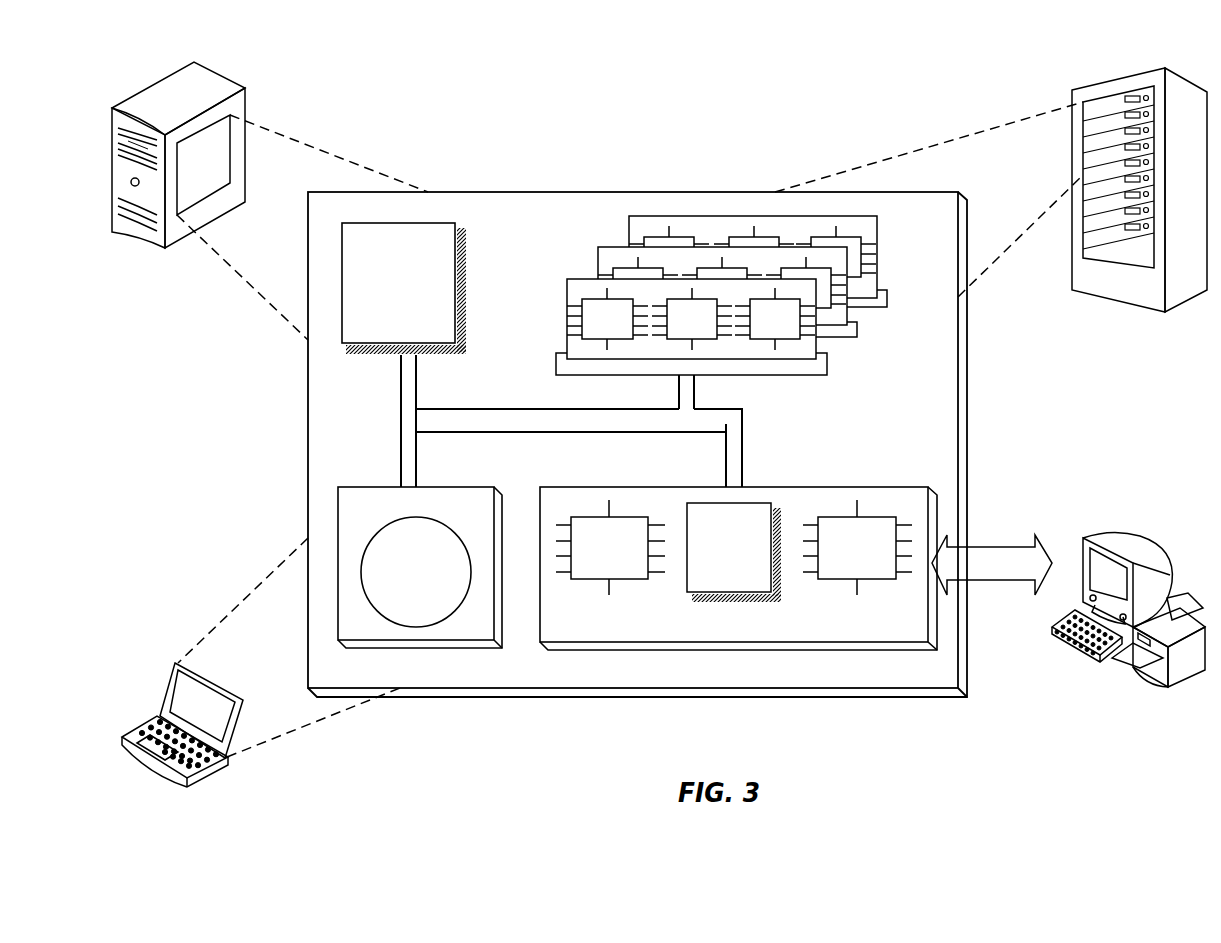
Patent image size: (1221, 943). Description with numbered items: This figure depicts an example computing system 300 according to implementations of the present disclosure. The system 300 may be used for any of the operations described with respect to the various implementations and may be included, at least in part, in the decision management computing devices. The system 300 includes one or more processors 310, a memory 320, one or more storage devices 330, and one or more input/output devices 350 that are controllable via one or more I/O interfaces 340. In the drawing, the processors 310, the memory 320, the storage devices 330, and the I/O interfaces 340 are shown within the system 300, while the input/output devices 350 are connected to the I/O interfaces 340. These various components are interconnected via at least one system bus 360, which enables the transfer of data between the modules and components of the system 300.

The computing system 300 is at (480, 121).
The processor 310 is at (447, 336).
The memory 320 is at (886, 346).
The storage device 330 is at (485, 633).
The I/O interface 340 is at (830, 633).
The input/output device 350 is at (1083, 539).
The system bus 360 is at (566, 424).